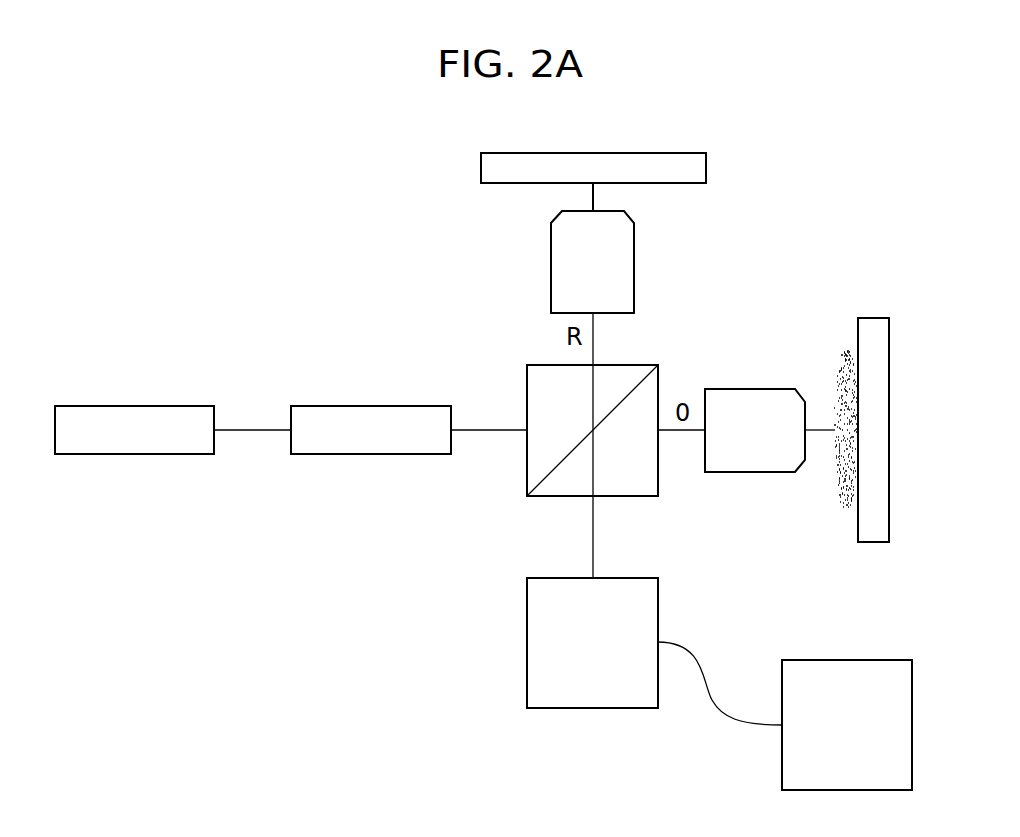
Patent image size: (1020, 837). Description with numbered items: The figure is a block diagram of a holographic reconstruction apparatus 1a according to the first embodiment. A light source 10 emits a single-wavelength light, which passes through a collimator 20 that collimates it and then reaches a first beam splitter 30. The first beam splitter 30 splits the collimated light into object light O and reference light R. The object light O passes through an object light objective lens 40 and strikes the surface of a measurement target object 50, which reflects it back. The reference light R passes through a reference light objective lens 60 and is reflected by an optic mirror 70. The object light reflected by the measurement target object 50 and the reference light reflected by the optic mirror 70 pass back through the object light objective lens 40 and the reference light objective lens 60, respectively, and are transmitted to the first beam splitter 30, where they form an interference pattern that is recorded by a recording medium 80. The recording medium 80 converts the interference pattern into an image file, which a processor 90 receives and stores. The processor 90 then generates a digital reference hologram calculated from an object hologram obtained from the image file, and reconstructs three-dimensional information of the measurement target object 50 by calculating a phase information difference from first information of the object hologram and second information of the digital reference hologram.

The holographic reconstruction apparatus 1a is at (283, 303).
The light source 10 is at (157, 406).
The collimator 20 is at (380, 405).
The first beam splitter 30 is at (630, 365).
The object light objective lens 40 is at (745, 389).
The measurement target object 50 is at (889, 313).
The reference light objective lens 60 is at (634, 265).
The optic mirror 70 is at (706, 165).
The recording medium 80 is at (633, 578).
The processor 90 is at (860, 660).